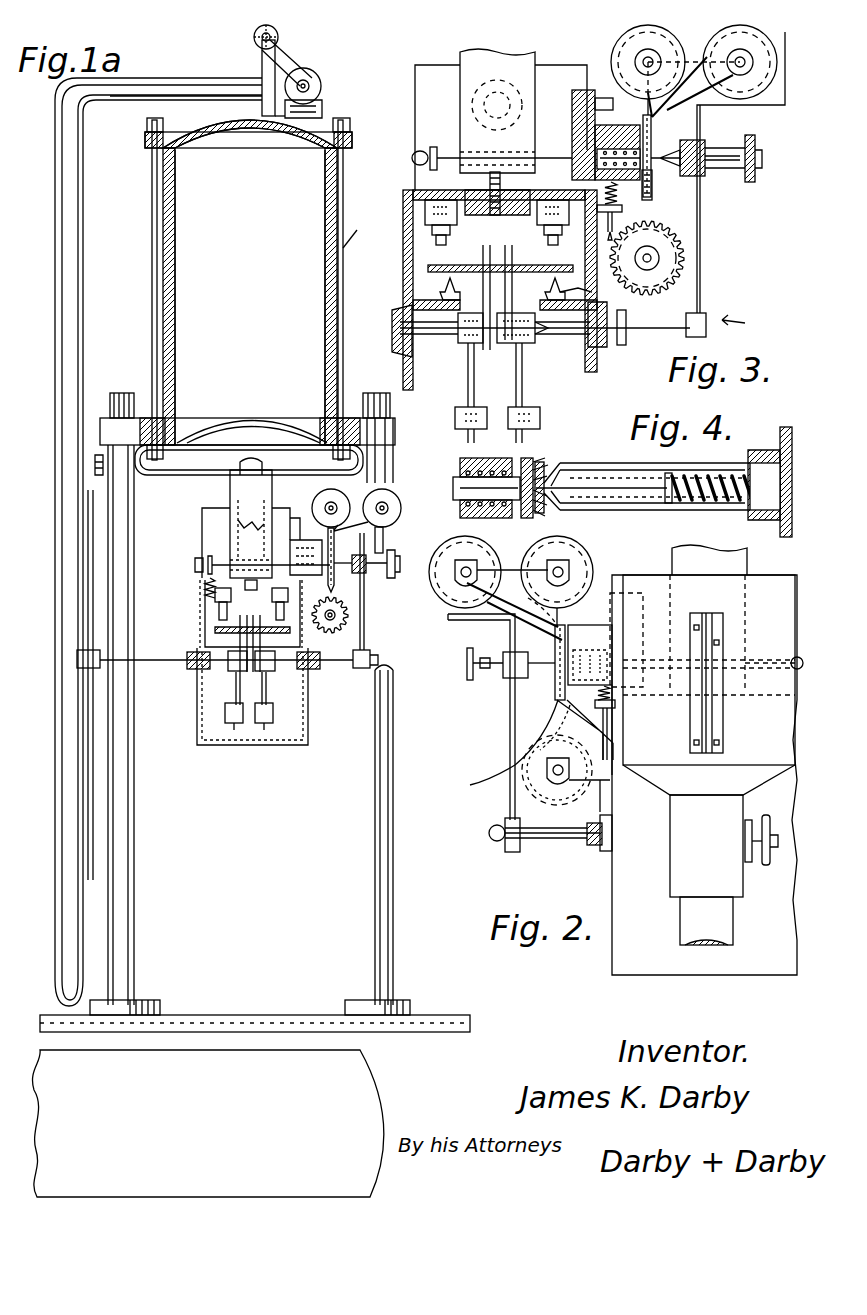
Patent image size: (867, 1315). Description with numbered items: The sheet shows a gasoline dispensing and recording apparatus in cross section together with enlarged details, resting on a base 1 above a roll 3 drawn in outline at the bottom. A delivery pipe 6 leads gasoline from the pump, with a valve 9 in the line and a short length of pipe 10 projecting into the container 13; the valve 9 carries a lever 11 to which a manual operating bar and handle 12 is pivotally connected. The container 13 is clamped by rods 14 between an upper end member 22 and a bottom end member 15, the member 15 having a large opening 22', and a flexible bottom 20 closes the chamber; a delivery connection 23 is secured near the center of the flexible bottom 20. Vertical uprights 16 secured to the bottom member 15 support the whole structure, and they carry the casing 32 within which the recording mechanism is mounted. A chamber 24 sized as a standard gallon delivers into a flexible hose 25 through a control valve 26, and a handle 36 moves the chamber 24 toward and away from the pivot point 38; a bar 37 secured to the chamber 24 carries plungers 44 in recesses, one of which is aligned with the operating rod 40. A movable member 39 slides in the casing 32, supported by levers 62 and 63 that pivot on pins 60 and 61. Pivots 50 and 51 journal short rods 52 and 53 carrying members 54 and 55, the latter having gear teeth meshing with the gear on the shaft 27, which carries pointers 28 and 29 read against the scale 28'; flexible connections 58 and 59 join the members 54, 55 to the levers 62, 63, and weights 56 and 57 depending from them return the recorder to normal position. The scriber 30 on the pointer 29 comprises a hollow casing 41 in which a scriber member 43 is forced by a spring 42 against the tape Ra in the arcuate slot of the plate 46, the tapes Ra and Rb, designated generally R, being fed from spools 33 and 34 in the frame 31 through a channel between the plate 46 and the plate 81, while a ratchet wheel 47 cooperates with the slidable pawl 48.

In FIG. 1A, the base plate 1 is at (460, 1025).
In FIG. 1A, the roll 3 is at (365, 1082).
In FIG. 1A, the delivery pipe 6 is at (58, 892).
In FIG. 1A, the valve 9 is at (320, 80).
In FIG. 1A, the short length of pipe 10 is at (322, 112).
In FIG. 1A, the lever 11 is at (290, 56).
In FIG. 1A, the manual operating bar and handle 12 is at (262, 58).
In FIG. 1A, the container 13 is at (176, 238).
In FIG. 1A, the rods 14 is at (160, 240).
In FIG. 3, the rods 14 is at (363, 233).
In FIG. 1A, the end member 15 is at (102, 418).
In FIG. 1A, the vertical uprights 16 is at (136, 884).
In FIG. 1A, the flexible bottom 20 is at (222, 474).
In FIG. 1A, the end member 22 is at (215, 537).
In FIG. 1A, the large opening 22' is at (247, 412).
In FIG. 1A, the delivery connection 23 is at (230, 492).
In FIG. 2, the delivery connection 23 is at (747, 560).
In FIG. 1A, the chamber or container 24 is at (202, 546).
In FIG. 3, the chamber or container 24 is at (418, 124).
In FIG. 2, the chamber or container 24 is at (790, 622).
In FIG. 2, the flexible hose 25 is at (690, 925).
In FIG. 2, the control valve 26 is at (724, 846).
In FIG. 1A, the shaft 27 is at (162, 652).
In FIG. 3, the shaft 27 is at (630, 333).
In FIG. 2, the shaft 27 is at (562, 840).
In FIG. 1A, the pointer 28 is at (126, 685).
In FIG. 1A, the indicating scale 28' is at (57, 473).
In FIG. 3, the pointer 29 is at (702, 281).
In FIG. 2, the pointer 29 is at (508, 736).
In FIG. 1A, the scriber member 30 is at (392, 578).
In FIG. 3, the scriber member 30 is at (748, 184).
In FIG. 4, the scriber member 30 is at (672, 428).
In FIG. 2, the scriber member 30 is at (412, 583).
In FIG. 1A, the bracket or frame work 31 is at (360, 612).
In FIG. 3, the bracket or frame work 31 is at (652, 152).
In FIG. 2, the bracket or frame work 31 is at (598, 738).
In FIG. 1A, the container or casing 32 is at (222, 672).
In FIG. 2, the container or casing 32 is at (612, 975).
In FIG. 1A, the tape roll 33 is at (370, 500).
In FIG. 3, the tape roll 33 is at (537, 60).
In FIG. 2, the tape roll 33 is at (448, 600).
In FIG. 1A, the tape roll 34 is at (314, 500).
In FIG. 3, the tape roll 34 is at (665, 44).
In FIG. 2, the tape roll 34 is at (530, 560).
In FIG. 2, the handle 36 is at (702, 685).
In FIG. 1A, the bar or rod 37 is at (306, 546).
In FIG. 3, the bar or rod 37 is at (616, 132).
In FIG. 4, the bar or rod 37 is at (458, 462).
In FIG. 2, the bar or rod 37 is at (590, 655).
In FIG. 3, the pivot point 38 is at (496, 216).
In FIG. 1A, the movable member 39 is at (207, 590).
In FIG. 3, the movable member 39 is at (542, 222).
In FIG. 1A, the operating rod 40 is at (195, 566).
In FIG. 3, the operating rod 40 is at (412, 158).
In FIG. 2, the operating rod 40 is at (786, 660).
In FIG. 4, the hollow casing 41 is at (665, 505).
In FIG. 4, the spring 42 is at (705, 510).
In FIG. 4, the pointer or scriber member 43 is at (600, 512).
In FIG. 3, the plungers 44 is at (598, 154).
In FIG. 4, the plungers 44 is at (466, 488).
In FIG. 3, the plate 46 is at (652, 185).
In FIG. 4, the plate 46 is at (552, 470).
In FIG. 3, the ratchet wheel 47 is at (672, 260).
In FIG. 2, the ratchet wheel 47 is at (530, 800).
In FIG. 3, the pawl 48 is at (647, 258).
In FIG. 2, the pawl 48 is at (615, 703).
In FIG. 1A, the pivot 50 is at (187, 668).
In FIG. 3, the pivot 50 is at (395, 343).
In FIG. 1A, the pivot 51 is at (313, 670).
In FIG. 3, the pivot 51 is at (612, 352).
In FIG. 3, the short pivot rod 52 is at (440, 336).
In FIG. 1A, the short pivot rod 53 is at (272, 672).
In FIG. 3, the member 54 is at (455, 360).
In FIG. 3, the member 55 is at (530, 352).
In FIG. 3, the weight 56 is at (455, 416).
In FIG. 3, the weight 57 is at (542, 416).
In FIG. 3, the flexible connection 58 is at (451, 297).
In FIG. 3, the flexible connection 59 is at (512, 283).
In FIG. 3, the pivot pin 60 is at (412, 290).
In FIG. 3, the pivot pin 61 is at (596, 294).
In FIG. 3, the lever 62 is at (468, 264).
In FIG. 3, the lever 63 is at (550, 332).
In FIG. 4, the plate 81 is at (530, 462).
In FIG. 3, the tape R is at (660, 108).
In FIG. 4, the tape Ra is at (548, 460).
In FIG. 2, the tape Ra is at (552, 718).
In FIG. 4, the tape Rb is at (530, 518).
In FIG. 2, the tape Rb is at (509, 748).